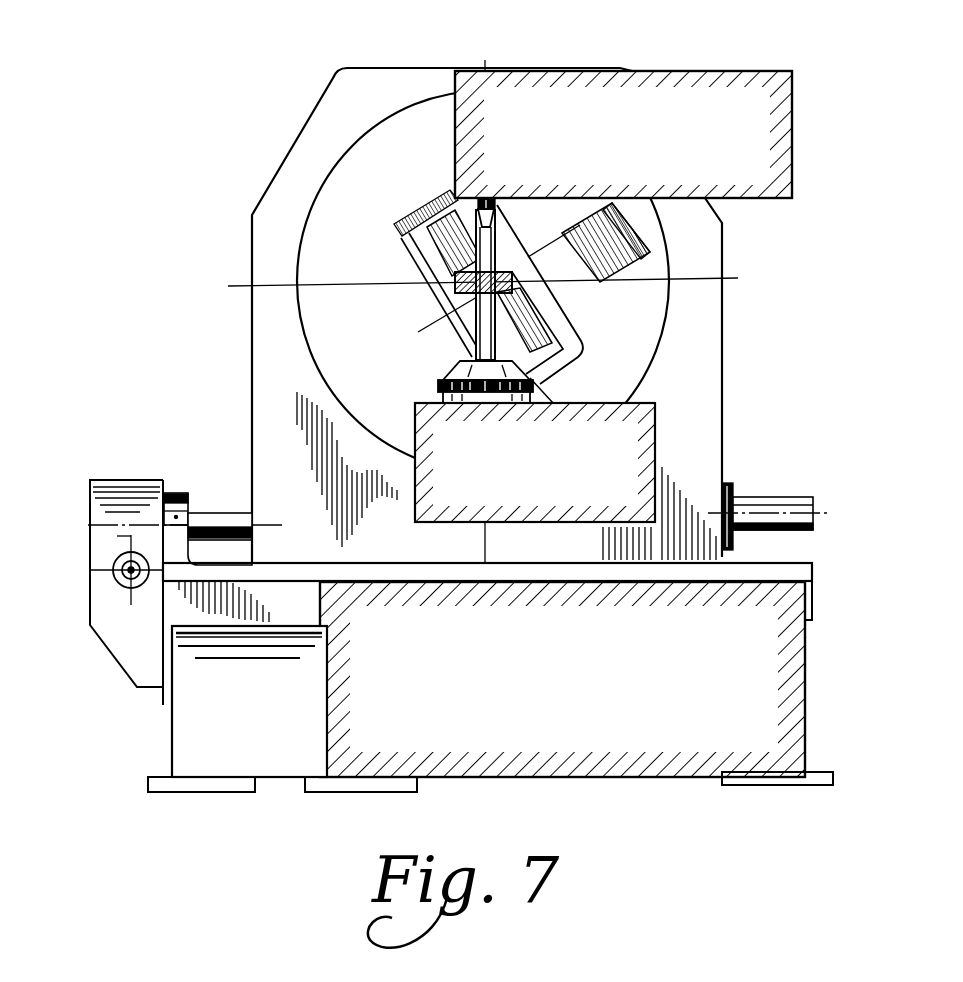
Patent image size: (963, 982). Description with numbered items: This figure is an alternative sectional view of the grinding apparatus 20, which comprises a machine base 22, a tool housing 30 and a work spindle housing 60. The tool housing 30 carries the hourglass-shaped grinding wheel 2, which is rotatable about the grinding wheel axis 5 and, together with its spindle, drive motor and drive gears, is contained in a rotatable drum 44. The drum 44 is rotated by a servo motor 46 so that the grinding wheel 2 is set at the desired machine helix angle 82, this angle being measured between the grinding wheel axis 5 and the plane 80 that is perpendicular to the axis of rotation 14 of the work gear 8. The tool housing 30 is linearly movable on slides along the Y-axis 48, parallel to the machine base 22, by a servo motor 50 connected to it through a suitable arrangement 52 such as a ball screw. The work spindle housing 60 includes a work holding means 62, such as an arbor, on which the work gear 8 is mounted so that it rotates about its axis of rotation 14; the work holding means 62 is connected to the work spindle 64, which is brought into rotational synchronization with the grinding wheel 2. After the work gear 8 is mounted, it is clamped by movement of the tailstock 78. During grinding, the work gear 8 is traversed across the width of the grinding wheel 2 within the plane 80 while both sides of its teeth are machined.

The hourglass-shaped grinding wheel 2 is at (420, 243).
The grinding wheel axis 5 is at (577, 222).
The work gear 8 is at (430, 297).
The axis of rotation 14 is at (460, 140).
The apparatus 20 is at (252, 131).
The machine base 22 is at (618, 671).
The tool housing 30 is at (252, 214).
The rotatable drum 44 is at (630, 365).
The servo motor 46 is at (800, 497).
The axis 48 is at (195, 510).
The servo motor 50 is at (122, 583).
The arrangement 52 is at (232, 512).
The work spindle housing 60 is at (590, 476).
The work holding means 62 is at (473, 335).
The work spindle 64 is at (440, 382).
The tailstock 78 is at (690, 97).
The plane 80 is at (270, 288).
The machine helix angle 82 is at (613, 277).